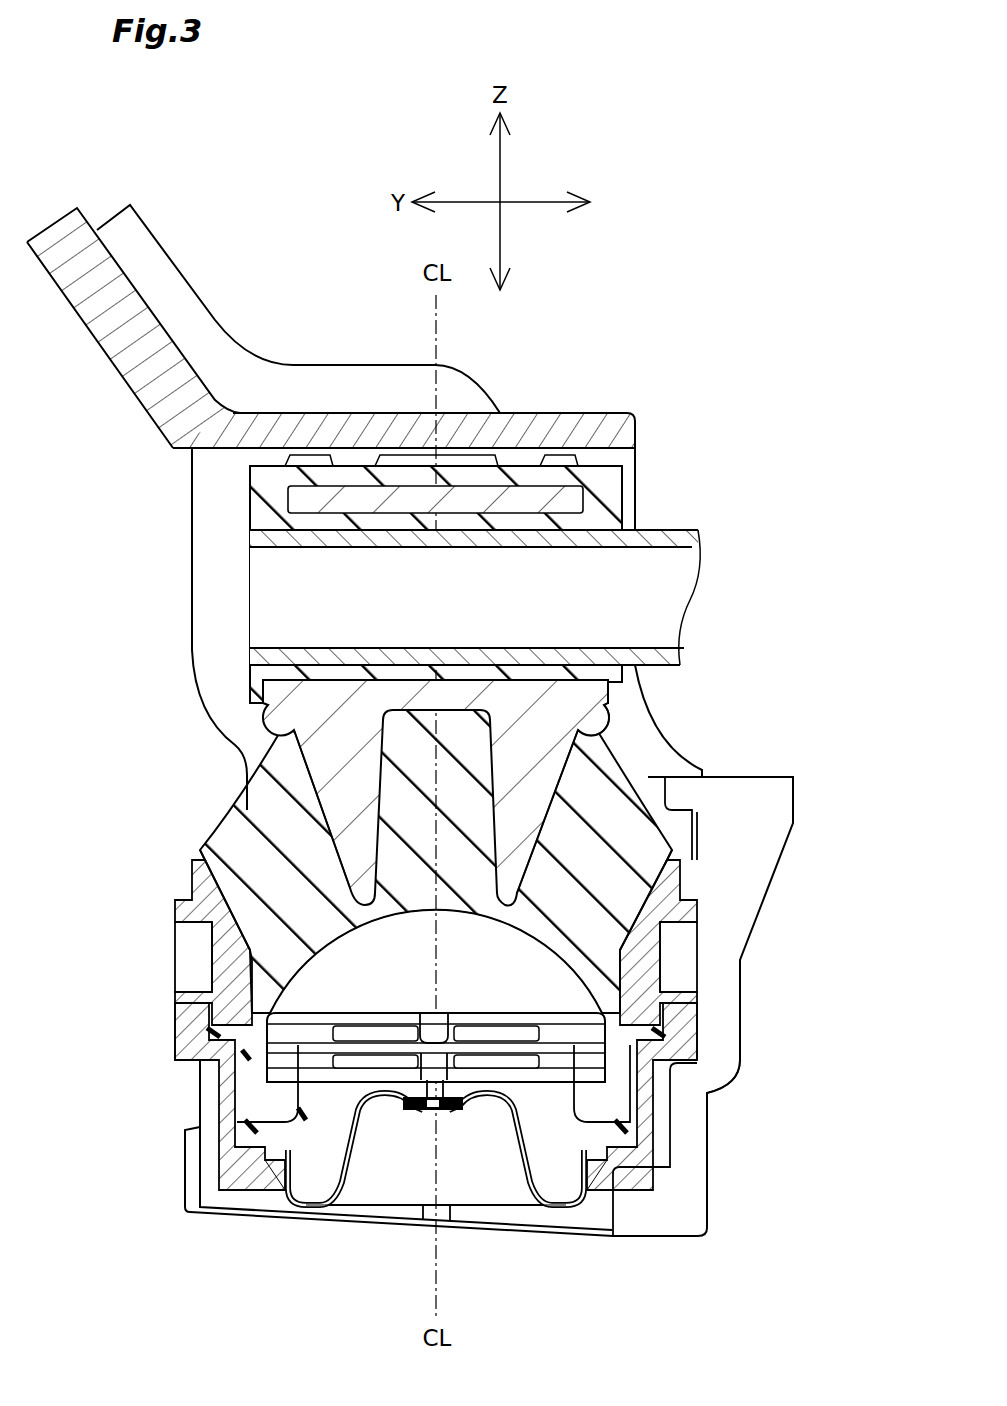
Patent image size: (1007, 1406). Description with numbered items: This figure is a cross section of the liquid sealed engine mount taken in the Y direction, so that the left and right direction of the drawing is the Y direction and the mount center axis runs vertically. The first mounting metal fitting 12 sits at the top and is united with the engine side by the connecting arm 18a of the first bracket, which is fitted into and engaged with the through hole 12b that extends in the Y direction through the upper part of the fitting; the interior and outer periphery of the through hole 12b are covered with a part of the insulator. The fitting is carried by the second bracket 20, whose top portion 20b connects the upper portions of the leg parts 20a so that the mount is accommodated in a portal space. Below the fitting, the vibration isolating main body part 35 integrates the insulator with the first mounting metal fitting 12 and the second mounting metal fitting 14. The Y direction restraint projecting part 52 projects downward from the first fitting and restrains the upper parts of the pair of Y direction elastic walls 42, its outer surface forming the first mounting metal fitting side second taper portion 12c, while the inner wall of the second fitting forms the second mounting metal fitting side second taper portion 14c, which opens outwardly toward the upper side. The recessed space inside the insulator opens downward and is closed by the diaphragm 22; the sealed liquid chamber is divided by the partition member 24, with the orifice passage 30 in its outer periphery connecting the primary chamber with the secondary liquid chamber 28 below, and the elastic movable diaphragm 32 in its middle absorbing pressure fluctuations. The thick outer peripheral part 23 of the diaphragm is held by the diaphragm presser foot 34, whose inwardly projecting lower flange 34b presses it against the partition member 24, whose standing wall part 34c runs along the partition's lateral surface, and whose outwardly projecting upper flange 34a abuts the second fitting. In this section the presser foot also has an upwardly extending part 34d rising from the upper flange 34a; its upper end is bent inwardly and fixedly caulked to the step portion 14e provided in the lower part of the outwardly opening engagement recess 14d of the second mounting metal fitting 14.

The second bracket 20 is at (295, 365).
The leg part 20a is at (193, 622).
The bracket flange portion 20b is at (545, 413).
The first mounting metal fitting 12 is at (576, 493).
The through hole 12b is at (303, 527).
The first mounting metal fitting side second taper portion 12c is at (327, 750).
The connecting arm 18a is at (672, 530).
The Y direction restraint projecting part 52 is at (260, 703).
The vibration isolating main body part 35 is at (628, 757).
The Y direction elastic wall 42 is at (325, 807).
The second mounting metal fitting 14 is at (687, 877).
The second mounting metal fitting side second taper portion 14c is at (235, 832).
The engagement recess 14d is at (185, 920).
The step portion 14e is at (180, 985).
The diaphragm presser foot 34 is at (170, 1005).
The upper flange 34a is at (195, 1060).
The lower flange 34b is at (243, 1163).
The standing wall part 34c is at (232, 1148).
The upwardly extending part 34d is at (178, 950).
The orifice passage 30 is at (610, 1097).
The elastic movable diaphragm 32 is at (400, 1050).
The diaphragm 22 is at (540, 1150).
The partition member 24 is at (507, 1083).
The secondary liquid chamber 28 is at (563, 1190).
The thick outer peripheral part 23 is at (232, 1162).